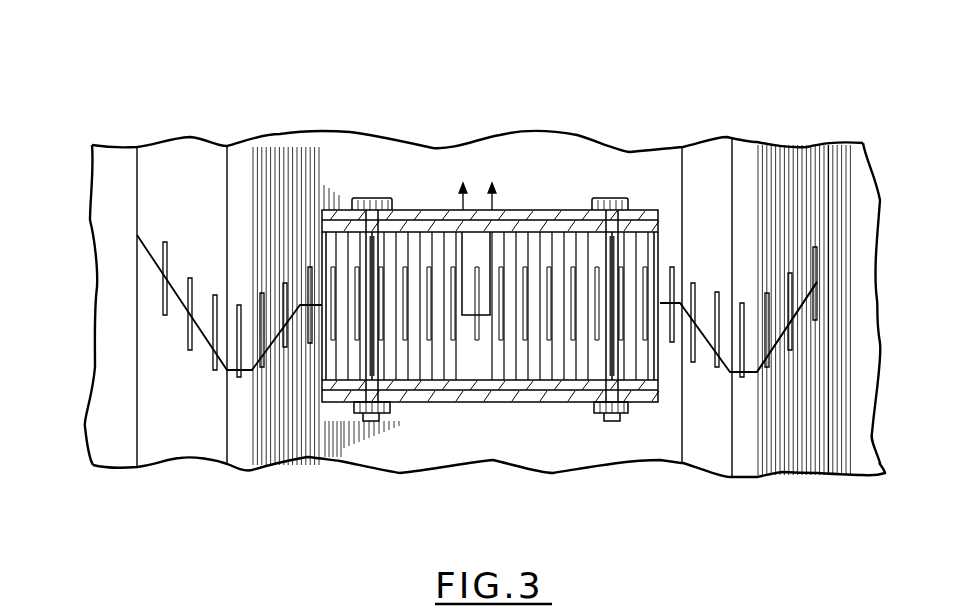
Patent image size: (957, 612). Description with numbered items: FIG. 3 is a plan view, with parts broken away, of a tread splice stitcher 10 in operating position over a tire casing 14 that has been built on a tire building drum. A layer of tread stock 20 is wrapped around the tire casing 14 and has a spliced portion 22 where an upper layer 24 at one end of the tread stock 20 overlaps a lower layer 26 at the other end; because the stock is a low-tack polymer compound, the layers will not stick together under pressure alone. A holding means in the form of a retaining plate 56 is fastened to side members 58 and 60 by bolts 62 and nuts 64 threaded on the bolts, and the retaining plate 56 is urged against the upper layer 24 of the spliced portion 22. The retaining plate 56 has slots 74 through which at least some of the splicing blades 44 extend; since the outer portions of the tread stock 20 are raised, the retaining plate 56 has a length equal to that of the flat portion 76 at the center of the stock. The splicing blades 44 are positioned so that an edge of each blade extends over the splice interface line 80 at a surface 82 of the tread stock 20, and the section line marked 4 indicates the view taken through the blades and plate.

The tread splice stitcher 10 is at (505, 190).
The tire casing 14 is at (862, 452).
The tread stock 20 is at (808, 165).
The spliced portion 22 is at (147, 313).
The upper layer 24 is at (207, 333).
The lower layer 26 is at (147, 274).
The splicing blades 44 is at (812, 320).
The retaining plate 56 is at (548, 404).
The side member 58 is at (642, 403).
The side member 60 is at (645, 207).
The bolts 62 is at (373, 197).
The nuts 64 is at (350, 422).
The slots 74 is at (453, 244).
The flat portion 76 is at (433, 450).
The splice interface line 80 is at (814, 280).
The surface 82 is at (474, 166).
The section line 4- 4 is at (474, 186).